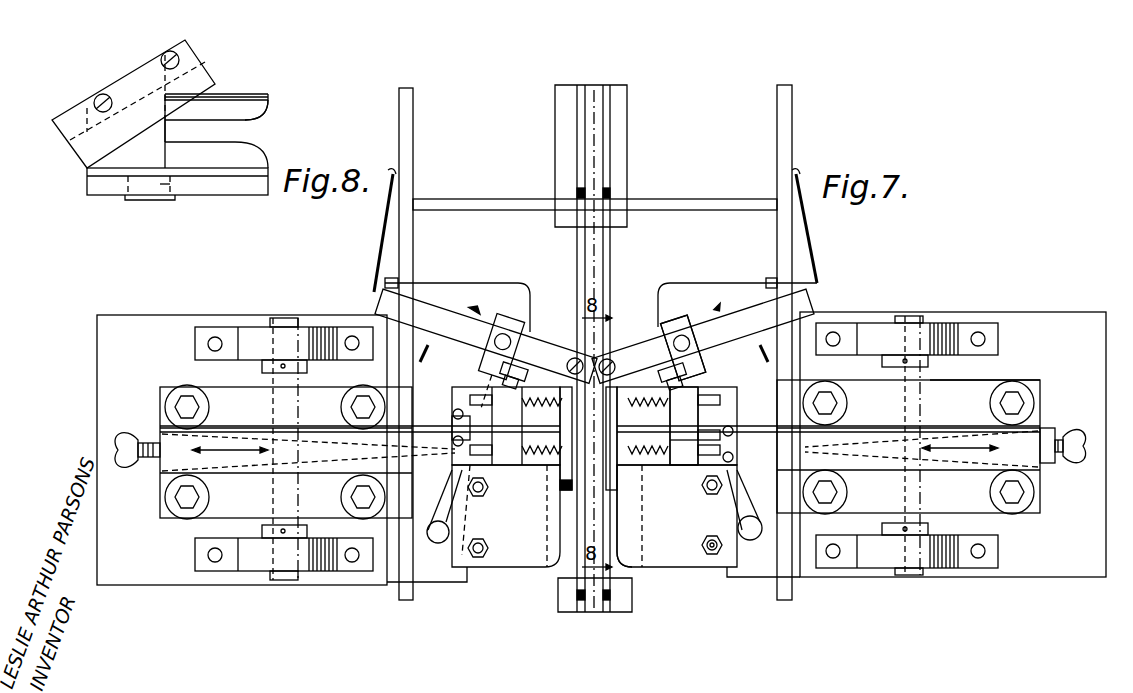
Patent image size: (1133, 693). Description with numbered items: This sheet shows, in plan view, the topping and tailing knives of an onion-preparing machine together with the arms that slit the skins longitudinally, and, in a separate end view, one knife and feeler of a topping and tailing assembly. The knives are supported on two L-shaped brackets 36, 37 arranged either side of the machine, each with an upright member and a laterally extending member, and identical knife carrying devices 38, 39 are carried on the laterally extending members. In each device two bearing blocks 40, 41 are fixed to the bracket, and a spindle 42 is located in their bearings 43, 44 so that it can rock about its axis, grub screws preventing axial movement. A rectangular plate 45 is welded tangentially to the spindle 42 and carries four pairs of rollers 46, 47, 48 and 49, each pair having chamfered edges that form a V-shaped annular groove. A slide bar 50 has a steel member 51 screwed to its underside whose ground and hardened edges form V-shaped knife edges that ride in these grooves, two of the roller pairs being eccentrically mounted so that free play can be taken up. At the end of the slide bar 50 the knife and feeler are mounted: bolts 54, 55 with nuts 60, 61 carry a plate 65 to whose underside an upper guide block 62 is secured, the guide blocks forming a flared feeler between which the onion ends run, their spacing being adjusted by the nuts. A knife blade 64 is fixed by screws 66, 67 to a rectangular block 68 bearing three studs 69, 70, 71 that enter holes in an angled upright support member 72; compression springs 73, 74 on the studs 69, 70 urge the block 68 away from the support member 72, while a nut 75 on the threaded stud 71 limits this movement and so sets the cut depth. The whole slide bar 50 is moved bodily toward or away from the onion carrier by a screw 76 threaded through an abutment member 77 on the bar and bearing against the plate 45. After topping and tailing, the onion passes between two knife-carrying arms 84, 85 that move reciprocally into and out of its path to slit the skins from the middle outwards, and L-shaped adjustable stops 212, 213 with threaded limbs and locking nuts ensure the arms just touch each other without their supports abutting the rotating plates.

In FIG. 7, the L-shaped bracket 36 is at (1043, 572).
In FIG. 7, the L-shaped bracket 37 is at (123, 582).
In FIG. 7, the knife carrying device 38 is at (1045, 487).
In FIG. 7, the knife carrying device 39 is at (158, 494).
In FIG. 7, the bearing block 40 is at (968, 335).
In FIG. 7, the bearing block 41 is at (968, 558).
In FIG. 7, the spindle 42 is at (903, 372).
In FIG. 7, the bearing 43 is at (928, 362).
In FIG. 7, the bearing 44 is at (930, 530).
In FIG. 8, the rectangular plate 45 is at (230, 186).
In FIG. 7, the rectangular plate 45 is at (968, 393).
In FIG. 7, the pair of rollers 46 is at (834, 405).
In FIG. 7, the pair of rollers 47 is at (1017, 398).
In FIG. 7, the pair of rollers 48 is at (1015, 500).
In FIG. 7, the pair of rollers 49 is at (836, 490).
In FIG. 8, the slide bar 50 is at (172, 186).
In FIG. 7, the slide bar 50 is at (1016, 441).
In FIG. 8, the member 51 is at (140, 200).
In FIG. 7, the member 51 is at (922, 430).
In FIG. 7, the bolt 54 is at (710, 555).
In FIG. 7, the bolt 55 is at (708, 492).
In FIG. 7, the nut 60 is at (705, 546).
In FIG. 7, the nut 61 is at (722, 500).
In FIG. 8, the upper guide block 62 is at (252, 112).
In FIG. 8, the knife blade 64 is at (197, 86).
In FIG. 8, the plate 65 is at (265, 97).
In FIG. 7, the plate 65 is at (652, 572).
In FIG. 8, the screw 66 is at (101, 94).
In FIG. 8, the screw 67 is at (172, 52).
In FIG. 8, the rectangular block 68 is at (200, 52).
In FIG. 7, the rectangular block 68 is at (622, 500).
In FIG. 7, the stud 69 is at (720, 400).
In FIG. 7, the stud 70 is at (726, 470).
In FIG. 7, the stud 71 is at (693, 460).
In FIG. 8, the support member 72 is at (160, 134).
In FIG. 7, the support member 72 is at (705, 390).
In FIG. 7, the compression spring 73 is at (636, 388).
In FIG. 7, the compression spring 74 is at (648, 460).
In FIG. 7, the nut 75 is at (724, 437).
In FIG. 7, the screw 76 is at (1085, 456).
In FIG. 7, the abutment member 77 is at (1050, 463).
In FIG. 7, the arm 84 is at (737, 322).
In FIG. 7, the arm 85 is at (542, 350).
In FIG. 7, the L-shaped adjustable stop 212 is at (710, 283).
In FIG. 7, the L-shaped adjustable stop 213 is at (460, 283).